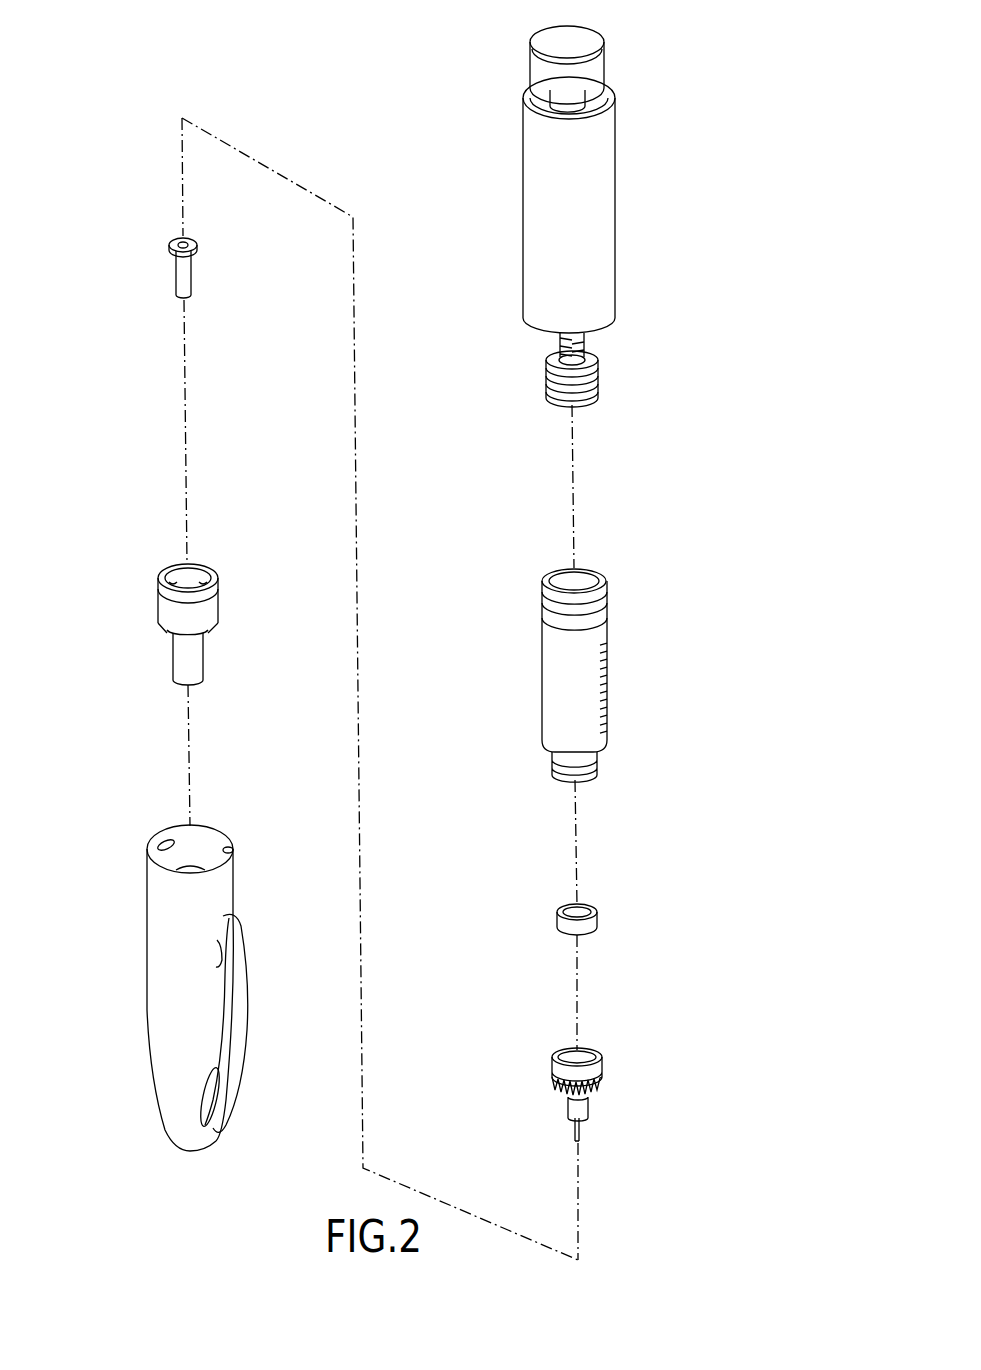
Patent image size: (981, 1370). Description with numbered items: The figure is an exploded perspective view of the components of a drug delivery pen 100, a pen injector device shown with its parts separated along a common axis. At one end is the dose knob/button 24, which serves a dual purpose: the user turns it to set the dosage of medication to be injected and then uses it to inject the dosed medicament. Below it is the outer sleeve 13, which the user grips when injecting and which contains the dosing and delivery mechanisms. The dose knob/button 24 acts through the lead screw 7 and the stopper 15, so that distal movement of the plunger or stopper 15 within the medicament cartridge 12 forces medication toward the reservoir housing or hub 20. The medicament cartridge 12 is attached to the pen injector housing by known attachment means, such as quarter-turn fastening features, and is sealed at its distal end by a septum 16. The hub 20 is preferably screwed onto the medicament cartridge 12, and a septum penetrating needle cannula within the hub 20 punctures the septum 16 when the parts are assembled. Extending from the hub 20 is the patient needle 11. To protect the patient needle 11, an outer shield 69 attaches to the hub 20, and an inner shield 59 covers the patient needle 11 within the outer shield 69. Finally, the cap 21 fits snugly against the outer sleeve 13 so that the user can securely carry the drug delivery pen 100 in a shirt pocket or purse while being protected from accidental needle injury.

The drug delivery pen 100 is at (134, 130).
The inner shield 59 is at (183, 274).
The outer shield 69 is at (170, 612).
The cap 21 is at (157, 979).
The dose knob/button 24 is at (598, 70).
The outer sleeve 13 is at (598, 203).
The lead screw 7 is at (587, 343).
The stopper 15 is at (598, 395).
The medicament cartridge 12 is at (553, 684).
The septum 16 is at (598, 921).
The hub 20 is at (601, 1063).
The patient needle 11 is at (582, 1125).